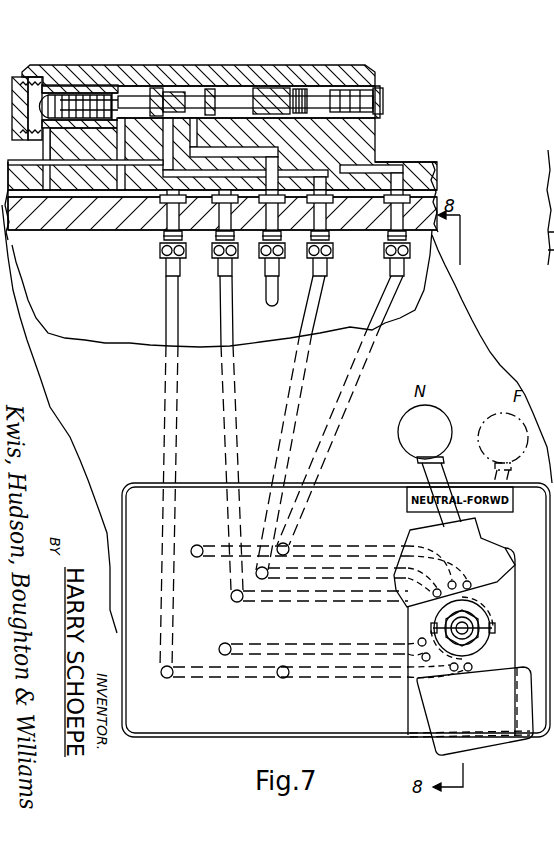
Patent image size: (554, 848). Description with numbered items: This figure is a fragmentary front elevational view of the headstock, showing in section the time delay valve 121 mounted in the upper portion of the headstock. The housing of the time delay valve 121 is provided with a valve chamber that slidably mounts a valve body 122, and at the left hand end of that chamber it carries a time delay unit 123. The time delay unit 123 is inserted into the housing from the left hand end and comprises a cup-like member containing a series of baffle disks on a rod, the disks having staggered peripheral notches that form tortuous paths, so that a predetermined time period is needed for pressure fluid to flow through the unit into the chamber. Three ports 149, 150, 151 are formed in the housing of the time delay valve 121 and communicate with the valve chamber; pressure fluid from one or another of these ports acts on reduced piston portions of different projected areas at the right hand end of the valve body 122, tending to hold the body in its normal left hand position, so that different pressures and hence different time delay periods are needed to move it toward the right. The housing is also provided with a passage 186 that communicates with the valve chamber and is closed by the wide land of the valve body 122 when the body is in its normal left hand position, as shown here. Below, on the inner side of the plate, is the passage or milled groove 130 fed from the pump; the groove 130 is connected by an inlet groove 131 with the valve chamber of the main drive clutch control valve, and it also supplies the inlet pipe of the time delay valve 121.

The time delay valve 121 is at (366, 140).
The valve body 122 is at (194, 94).
The time delay unit 123 is at (80, 85).
The passage 186 is at (163, 75).
The port 149 is at (268, 64).
The port 150 is at (306, 64).
The port 151 is at (349, 64).
The passage or milled groove 130 is at (215, 563).
The inlet groove 131 is at (332, 548).